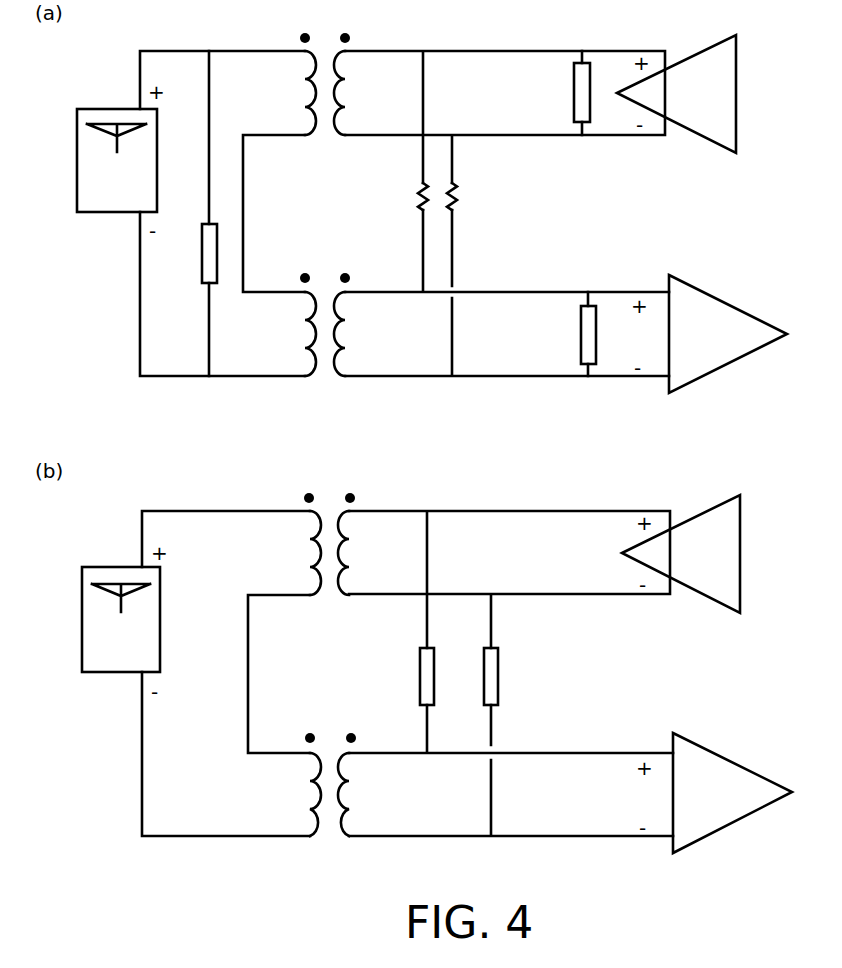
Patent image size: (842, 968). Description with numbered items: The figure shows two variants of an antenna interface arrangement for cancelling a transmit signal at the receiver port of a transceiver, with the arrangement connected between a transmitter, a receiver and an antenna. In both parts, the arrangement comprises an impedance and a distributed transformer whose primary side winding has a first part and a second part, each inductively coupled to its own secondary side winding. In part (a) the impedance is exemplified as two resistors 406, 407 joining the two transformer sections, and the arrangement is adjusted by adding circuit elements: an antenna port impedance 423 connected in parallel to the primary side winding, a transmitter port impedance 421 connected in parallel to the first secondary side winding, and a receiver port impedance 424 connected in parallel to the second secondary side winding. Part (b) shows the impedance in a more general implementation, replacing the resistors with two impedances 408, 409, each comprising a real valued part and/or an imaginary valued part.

The resistor 406 is at (418, 200).
The resistor 407 is at (457, 203).
The impedance 408 is at (420, 690).
The impedance 409 is at (498, 690).
The transmitter port impedance 421 is at (573, 98).
The antenna port impedance 423 is at (202, 266).
The receiver port impedance 424 is at (581, 343).